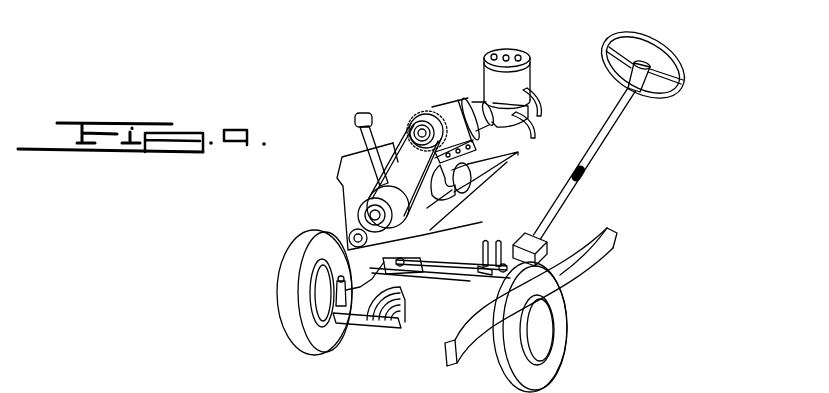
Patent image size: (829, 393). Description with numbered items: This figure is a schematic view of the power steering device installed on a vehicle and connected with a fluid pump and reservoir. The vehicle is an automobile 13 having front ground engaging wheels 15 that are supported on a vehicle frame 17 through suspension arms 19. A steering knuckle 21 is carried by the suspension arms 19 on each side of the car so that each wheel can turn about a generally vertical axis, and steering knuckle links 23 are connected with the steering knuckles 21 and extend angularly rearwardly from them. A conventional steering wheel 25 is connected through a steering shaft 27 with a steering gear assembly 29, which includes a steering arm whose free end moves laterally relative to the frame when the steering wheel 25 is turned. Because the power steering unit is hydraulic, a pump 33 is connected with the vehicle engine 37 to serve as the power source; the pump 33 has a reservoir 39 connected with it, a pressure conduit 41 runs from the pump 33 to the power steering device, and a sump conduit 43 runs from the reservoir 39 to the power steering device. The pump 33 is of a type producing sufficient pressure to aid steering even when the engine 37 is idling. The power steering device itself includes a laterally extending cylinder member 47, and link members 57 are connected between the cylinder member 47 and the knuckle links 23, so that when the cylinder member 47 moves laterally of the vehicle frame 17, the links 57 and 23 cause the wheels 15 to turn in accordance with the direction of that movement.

The automobile 13 is at (483, 362).
The front ground engaging wheels 15 is at (550, 360).
The vehicle frame 17 is at (591, 251).
The suspension arms 19 is at (373, 330).
The steering knuckle 21 is at (335, 292).
The steering knuckle links 23 is at (353, 291).
The steering wheel 25 is at (667, 46).
The steering shaft 27 is at (598, 144).
The steering gear assembly 29 is at (547, 242).
The pump 33 is at (483, 97).
The vehicle engine 37 is at (340, 186).
The reservoir 39 is at (542, 72).
The pressure conduit 41 is at (541, 118).
The sump conduit 43 is at (539, 103).
The cylinder member 47 is at (459, 252).
The link member 57 is at (414, 275).